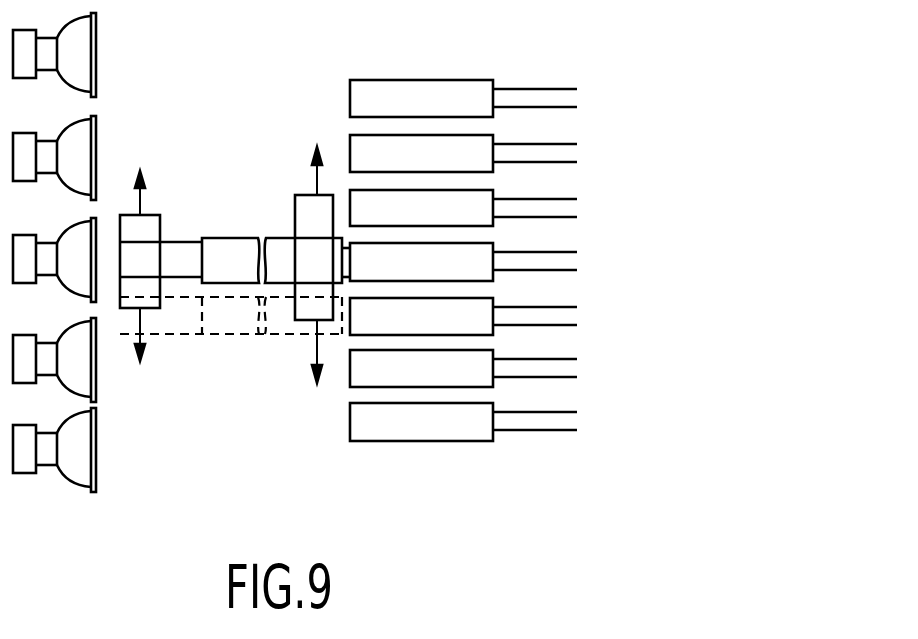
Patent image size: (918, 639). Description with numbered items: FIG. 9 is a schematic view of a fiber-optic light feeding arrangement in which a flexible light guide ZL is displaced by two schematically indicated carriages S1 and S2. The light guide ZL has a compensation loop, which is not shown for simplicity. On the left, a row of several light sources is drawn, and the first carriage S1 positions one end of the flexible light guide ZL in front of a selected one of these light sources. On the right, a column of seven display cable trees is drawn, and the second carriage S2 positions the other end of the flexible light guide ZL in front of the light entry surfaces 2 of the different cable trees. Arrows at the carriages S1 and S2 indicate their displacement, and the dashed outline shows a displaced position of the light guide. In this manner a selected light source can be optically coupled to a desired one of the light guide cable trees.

The carriage S1 is at (160, 215).
The second carriage S2 is at (304, 213).
The intermediate shaft ZL is at (181, 248).
The light entry surfaces 2 is at (350, 199).